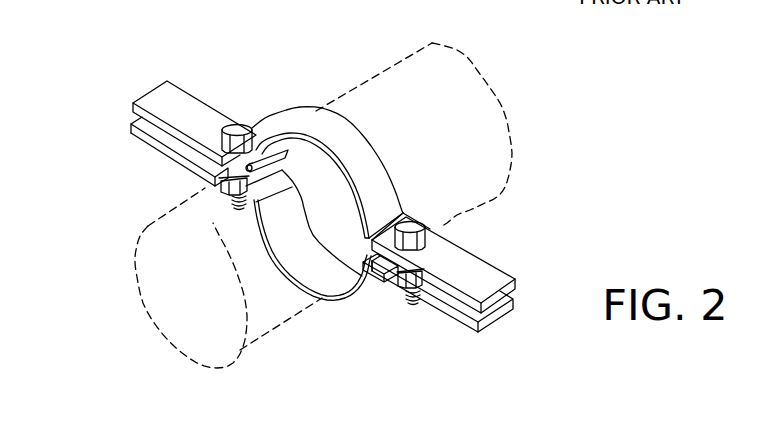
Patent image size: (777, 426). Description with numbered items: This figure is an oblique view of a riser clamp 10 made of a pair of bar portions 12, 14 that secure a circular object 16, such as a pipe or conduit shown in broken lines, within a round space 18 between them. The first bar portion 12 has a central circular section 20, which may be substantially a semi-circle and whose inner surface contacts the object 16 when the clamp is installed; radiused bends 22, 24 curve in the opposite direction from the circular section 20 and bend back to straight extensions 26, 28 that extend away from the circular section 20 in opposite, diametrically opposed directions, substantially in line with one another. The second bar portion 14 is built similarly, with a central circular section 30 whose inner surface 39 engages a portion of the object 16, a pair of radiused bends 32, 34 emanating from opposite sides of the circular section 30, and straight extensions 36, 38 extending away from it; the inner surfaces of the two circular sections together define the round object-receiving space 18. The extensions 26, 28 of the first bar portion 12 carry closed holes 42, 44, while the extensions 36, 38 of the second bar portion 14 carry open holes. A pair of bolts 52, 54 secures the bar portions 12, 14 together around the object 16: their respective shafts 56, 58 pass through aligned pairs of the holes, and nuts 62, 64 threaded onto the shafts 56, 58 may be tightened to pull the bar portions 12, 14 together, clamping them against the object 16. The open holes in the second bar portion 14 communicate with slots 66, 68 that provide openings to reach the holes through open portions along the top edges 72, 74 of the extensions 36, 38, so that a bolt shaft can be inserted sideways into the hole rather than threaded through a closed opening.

The clamp 10 is at (182, 44).
The first bar portion 12 is at (134, 72).
The second bar portion 14 is at (108, 128).
The circular object 16 is at (496, 88).
The round space 18 is at (332, 309).
The central circular section 20 is at (312, 120).
The radiused bend 22 is at (252, 162).
The radiused bend 24 is at (392, 212).
The straight extension 26 is at (172, 98).
The straight extension 28 is at (487, 277).
The central circular section 30 is at (303, 297).
The radiused bend 32 is at (251, 200).
The radiused bend 34 is at (371, 278).
The straight extension 36 is at (167, 138).
The straight extension 38 is at (470, 313).
The inner surface 39 is at (297, 238).
The closed hole 42 is at (225, 117).
The closed hole 44 is at (432, 245).
The bolt 52 is at (237, 128).
The bolt 54 is at (425, 212).
The shaft 56 is at (227, 207).
The shaft 58 is at (415, 307).
The nut 62 is at (221, 201).
The nut 64 is at (403, 291).
The slot 66 is at (210, 180).
The slot 68 is at (391, 292).
The top edge 72 is at (140, 137).
The top edge 74 is at (457, 317).